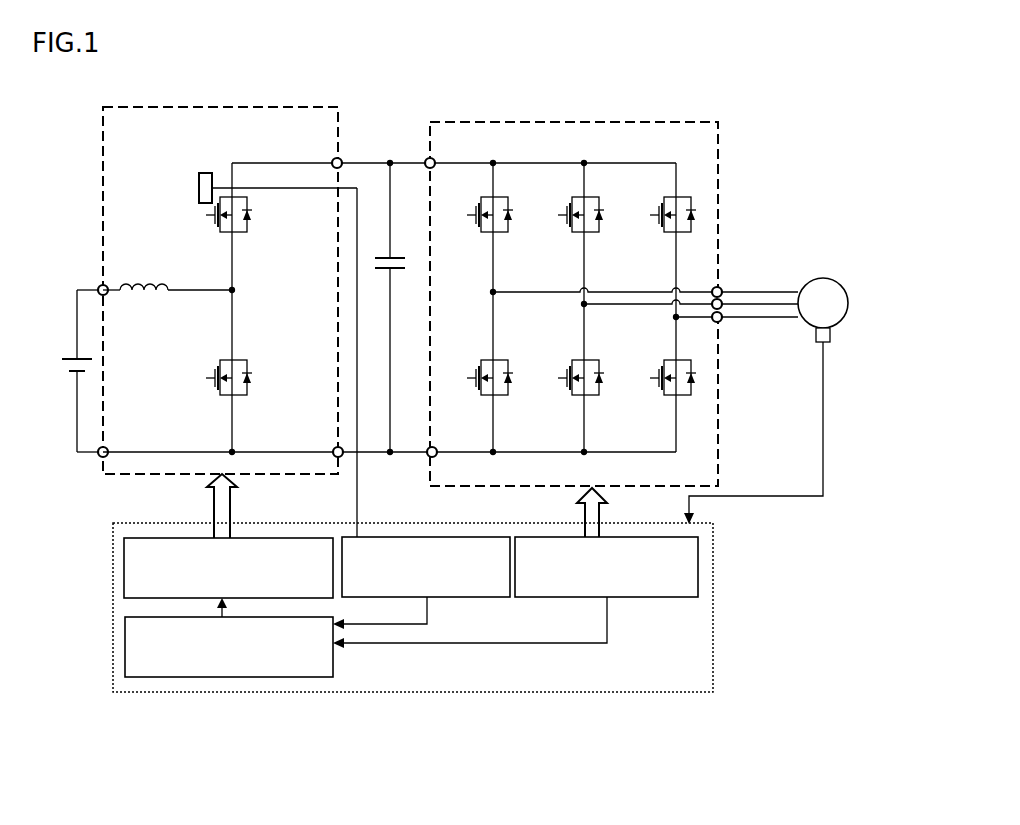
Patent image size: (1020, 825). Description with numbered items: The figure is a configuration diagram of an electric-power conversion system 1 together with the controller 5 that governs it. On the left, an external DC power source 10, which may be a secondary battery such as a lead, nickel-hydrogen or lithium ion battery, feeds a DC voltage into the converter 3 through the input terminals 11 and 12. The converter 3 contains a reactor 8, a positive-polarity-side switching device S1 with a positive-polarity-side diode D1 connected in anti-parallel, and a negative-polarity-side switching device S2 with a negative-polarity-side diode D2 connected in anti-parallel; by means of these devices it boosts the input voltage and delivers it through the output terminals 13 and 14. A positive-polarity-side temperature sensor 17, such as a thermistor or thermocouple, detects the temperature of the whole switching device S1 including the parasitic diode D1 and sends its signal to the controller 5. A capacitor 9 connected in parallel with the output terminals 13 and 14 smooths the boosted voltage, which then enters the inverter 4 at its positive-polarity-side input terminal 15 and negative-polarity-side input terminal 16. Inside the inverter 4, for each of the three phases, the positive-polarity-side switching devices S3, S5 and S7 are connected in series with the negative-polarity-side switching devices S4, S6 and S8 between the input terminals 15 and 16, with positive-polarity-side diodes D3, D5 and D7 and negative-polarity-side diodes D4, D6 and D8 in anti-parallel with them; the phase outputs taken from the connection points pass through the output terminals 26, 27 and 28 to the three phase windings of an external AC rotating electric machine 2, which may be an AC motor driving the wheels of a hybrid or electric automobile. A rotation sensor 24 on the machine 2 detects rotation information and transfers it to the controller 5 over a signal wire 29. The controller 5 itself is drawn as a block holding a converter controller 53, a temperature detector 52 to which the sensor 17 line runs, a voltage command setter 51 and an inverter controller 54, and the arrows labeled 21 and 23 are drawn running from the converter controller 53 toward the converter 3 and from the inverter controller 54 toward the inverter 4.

The electric-power conversion system 1 is at (738, 78).
The AC rotating electric machine 2 is at (812, 278).
The converter 3 is at (200, 107).
The inverter 4 is at (590, 122).
The controller 5 is at (713, 604).
The reactor 8 is at (142, 270).
The capacitor 9 is at (397, 255).
The DC power source 10 is at (66, 380).
The input terminal 11 is at (98, 287).
The input terminal 12 is at (98, 457).
The output terminal 13 is at (339, 158).
The output terminal 14 is at (335, 460).
The positive-polarity-side input terminal 15 is at (431, 158).
The negative-polarity-side input terminal 16 is at (427, 460).
The positive-polarity-side temperature sensor 17 is at (208, 173).
The converter control signal 21 is at (213, 498).
The inverter control signal 23 is at (602, 505).
The rotation sensor 24 is at (832, 335).
The output terminal 26 is at (719, 287).
The output terminal 27 is at (722, 307).
The output terminal 28 is at (721, 321).
The signal wire 29 is at (823, 462).
The voltage command setter 51 is at (268, 677).
The temperature detector 52 is at (445, 597).
The converter controller 53 is at (124, 568).
The inverter controller 54 is at (648, 597).
The positive-polarity-side switching device S1 is at (222, 235).
The negative-polarity-side switching device S2 is at (222, 398).
The positive-polarity-side switching device S3 is at (483, 235).
The negative-polarity-side switching device S4 is at (488, 357).
The positive-polarity-side switching device S5 is at (574, 235).
The negative-polarity-side switching device S6 is at (580, 357).
The positive-polarity-side switching device S7 is at (666, 235).
The negative-polarity-side switching device S8 is at (670, 360).
The positive-polarity-side diode D1 is at (248, 232).
The negative-polarity-side diode D2 is at (248, 395).
The positive-polarity-side diode D3 is at (510, 228).
The negative-polarity-side diode D4 is at (528, 345).
The positive-polarity-side diode D5 is at (601, 228).
The negative-polarity-side diode D6 is at (600, 392).
The positive-polarity-side diode D7 is at (693, 228).
The negative-polarity-side diode D8 is at (692, 392).